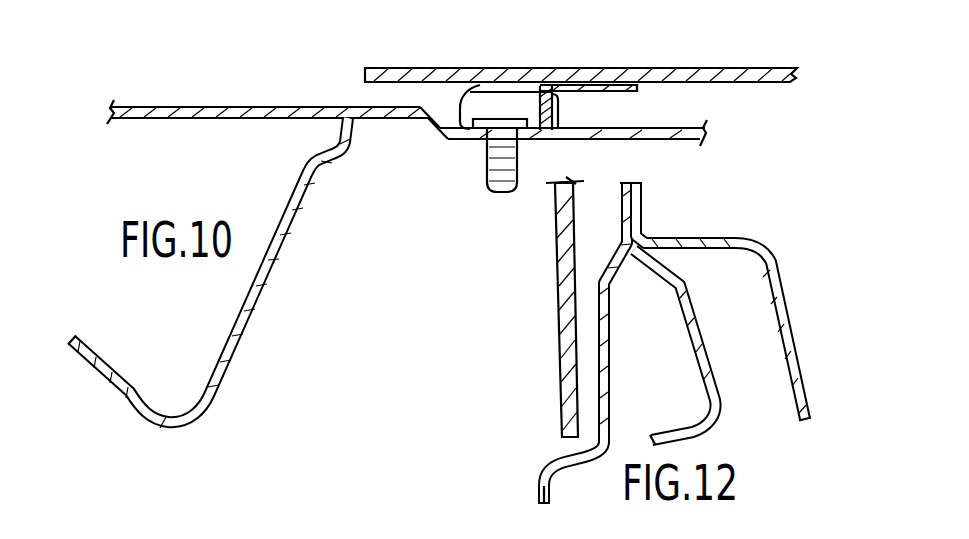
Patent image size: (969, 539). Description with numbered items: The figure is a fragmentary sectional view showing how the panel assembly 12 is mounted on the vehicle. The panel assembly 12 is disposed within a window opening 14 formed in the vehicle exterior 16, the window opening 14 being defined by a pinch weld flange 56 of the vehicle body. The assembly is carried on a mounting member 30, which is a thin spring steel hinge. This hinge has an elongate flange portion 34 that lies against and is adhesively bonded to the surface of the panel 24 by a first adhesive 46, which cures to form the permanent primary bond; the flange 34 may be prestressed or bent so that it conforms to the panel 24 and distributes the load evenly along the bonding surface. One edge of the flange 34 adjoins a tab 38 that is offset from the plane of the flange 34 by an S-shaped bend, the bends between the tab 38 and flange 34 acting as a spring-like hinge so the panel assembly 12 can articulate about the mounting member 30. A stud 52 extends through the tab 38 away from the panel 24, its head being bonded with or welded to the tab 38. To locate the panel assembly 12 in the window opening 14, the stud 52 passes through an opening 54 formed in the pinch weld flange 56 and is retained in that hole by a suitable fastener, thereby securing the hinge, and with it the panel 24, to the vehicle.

In FIG. 10, the panel assembly 12 is at (476, 60).
In FIG. 12, the panel assembly 12 is at (553, 333).
In FIG. 10, the window opening 14 is at (426, 106).
In FIG. 12, the window opening 14 is at (565, 458).
In FIG. 10, the vehicle exterior 16 is at (293, 106).
In FIG. 12, the vehicle exterior 16 is at (538, 485).
In FIG. 10, the panel 24 is at (708, 67).
In FIG. 10, the mounting member 30 is at (593, 115).
In FIG. 10, the flange portion 34 is at (641, 92).
In FIG. 10, the tab 38 is at (478, 88).
In FIG. 10, the first adhesive 46 is at (601, 86).
In FIG. 10, the stud 52 is at (525, 162).
In FIG. 10, the opening 54 is at (500, 135).
In FIG. 10, the pinch weld flange 56 is at (668, 141).
In FIG. 12, the pinch weld flange 56 is at (637, 218).